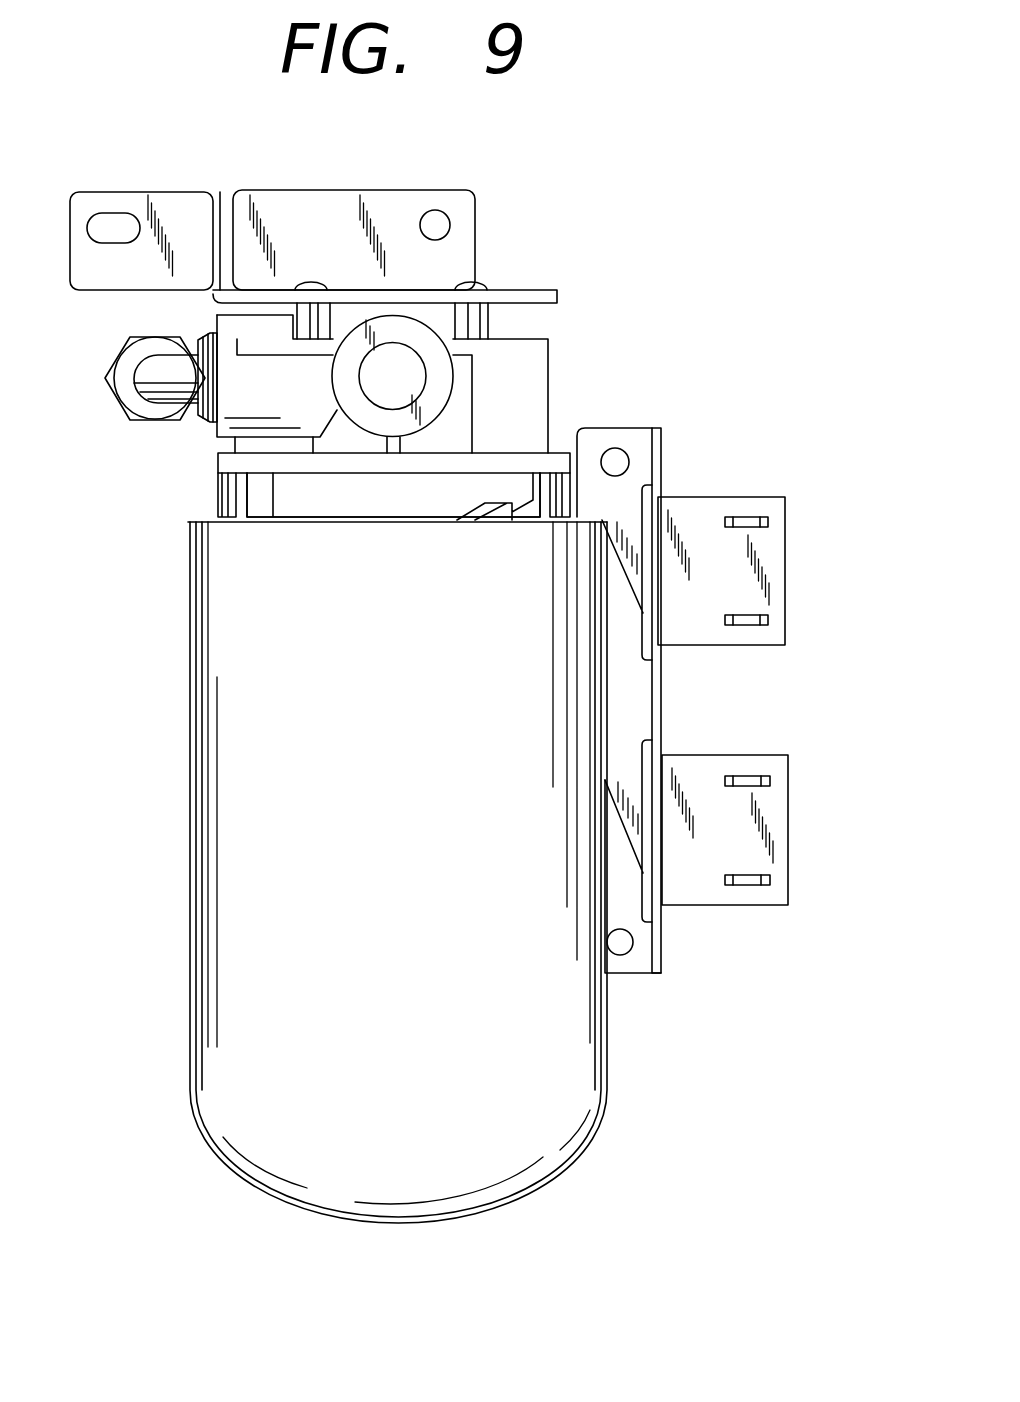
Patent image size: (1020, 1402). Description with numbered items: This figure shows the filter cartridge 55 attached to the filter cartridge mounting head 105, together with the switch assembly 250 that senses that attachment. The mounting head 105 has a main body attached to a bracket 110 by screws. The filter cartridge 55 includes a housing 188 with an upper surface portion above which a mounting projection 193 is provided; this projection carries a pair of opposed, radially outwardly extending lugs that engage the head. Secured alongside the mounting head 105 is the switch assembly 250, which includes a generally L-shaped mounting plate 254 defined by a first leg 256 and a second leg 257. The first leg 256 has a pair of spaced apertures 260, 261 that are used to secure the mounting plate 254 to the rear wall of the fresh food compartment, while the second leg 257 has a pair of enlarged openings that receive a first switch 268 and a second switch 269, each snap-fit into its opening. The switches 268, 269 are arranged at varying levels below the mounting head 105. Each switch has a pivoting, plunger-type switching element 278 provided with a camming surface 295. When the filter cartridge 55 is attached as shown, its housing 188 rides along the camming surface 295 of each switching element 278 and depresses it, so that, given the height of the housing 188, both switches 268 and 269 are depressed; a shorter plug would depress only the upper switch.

The filter cartridge 55 is at (187, 803).
The filter cartridge mounting head 105 is at (567, 310).
The bracket 110 is at (320, 190).
The housing 188 is at (399, 784).
The mounting projection 193 is at (313, 508).
The switch assembly 250 is at (682, 688).
The mounting plate 254 is at (710, 922).
The first leg 256 is at (656, 414).
The second leg 257 is at (661, 695).
The aperture 260 is at (625, 457).
The aperture 261 is at (628, 950).
The first switch 268 is at (785, 537).
The second switch 269 is at (788, 818).
The switching element 278 is at (610, 785).
The camming surface 295 is at (622, 570).